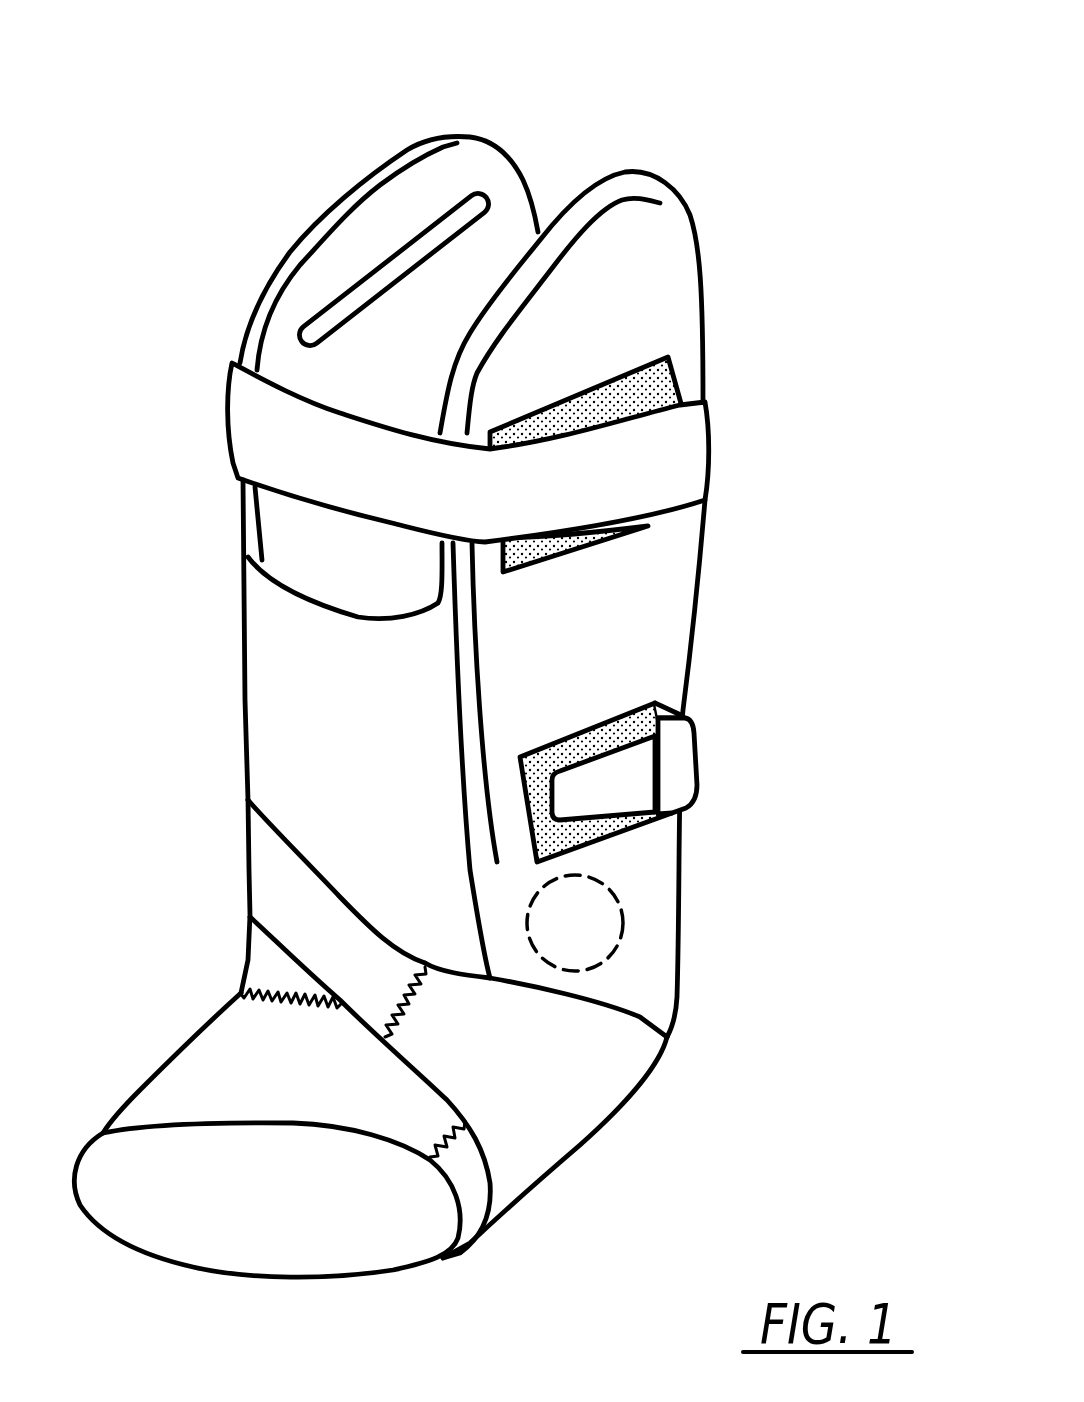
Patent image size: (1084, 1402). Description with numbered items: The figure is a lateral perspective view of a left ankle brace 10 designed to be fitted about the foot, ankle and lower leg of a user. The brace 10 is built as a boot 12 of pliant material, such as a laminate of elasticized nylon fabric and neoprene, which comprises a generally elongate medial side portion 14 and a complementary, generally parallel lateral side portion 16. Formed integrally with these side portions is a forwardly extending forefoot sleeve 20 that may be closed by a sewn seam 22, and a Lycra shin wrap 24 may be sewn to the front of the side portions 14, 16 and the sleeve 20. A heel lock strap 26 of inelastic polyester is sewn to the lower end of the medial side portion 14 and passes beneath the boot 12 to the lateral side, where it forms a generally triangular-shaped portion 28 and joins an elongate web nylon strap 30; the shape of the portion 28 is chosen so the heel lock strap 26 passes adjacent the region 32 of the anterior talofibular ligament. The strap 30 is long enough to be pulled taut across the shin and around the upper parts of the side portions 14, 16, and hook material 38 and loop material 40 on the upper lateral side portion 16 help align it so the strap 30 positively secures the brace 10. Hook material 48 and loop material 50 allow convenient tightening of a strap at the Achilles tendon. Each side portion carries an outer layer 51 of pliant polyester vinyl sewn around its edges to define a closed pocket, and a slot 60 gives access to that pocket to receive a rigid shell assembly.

The ankle brace 10 is at (740, 108).
The boot 12 is at (706, 604).
The medial side portion 14 is at (371, 225).
The lateral side portion 16 is at (670, 233).
The forefoot sleeve 20 is at (330, 1122).
The sewn seam 22 is at (490, 1190).
The shin wrap 24 is at (290, 733).
The heel lock strap 26 is at (593, 1136).
The triangular-shaped portion 28 is at (577, 1110).
The elongate strap 30 is at (278, 883).
The region of the anterior talofibular ligament 32 is at (600, 930).
The hook material 38 is at (656, 392).
The loop material 40 is at (686, 460).
The hook material 48 is at (662, 709).
The loop material 50 is at (660, 787).
The outer layer 51 is at (607, 660).
The slot 60 is at (470, 207).